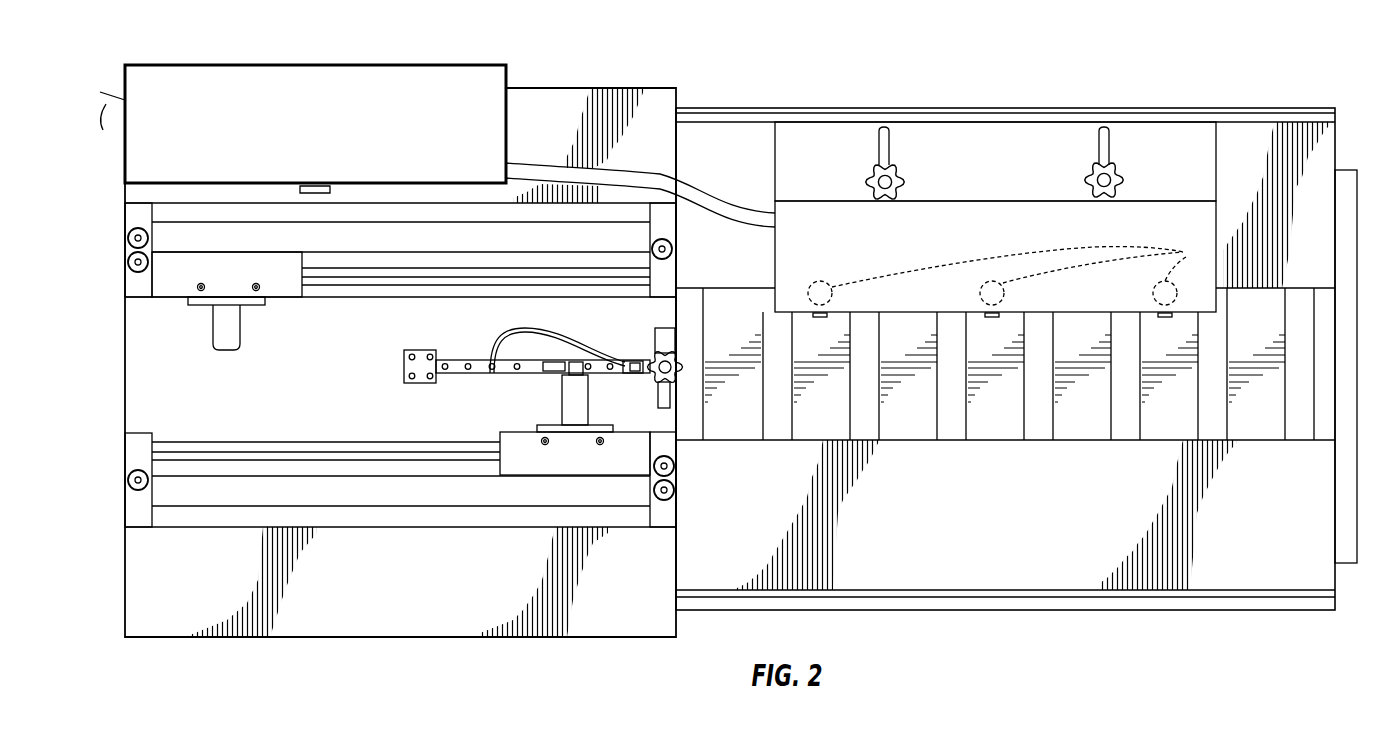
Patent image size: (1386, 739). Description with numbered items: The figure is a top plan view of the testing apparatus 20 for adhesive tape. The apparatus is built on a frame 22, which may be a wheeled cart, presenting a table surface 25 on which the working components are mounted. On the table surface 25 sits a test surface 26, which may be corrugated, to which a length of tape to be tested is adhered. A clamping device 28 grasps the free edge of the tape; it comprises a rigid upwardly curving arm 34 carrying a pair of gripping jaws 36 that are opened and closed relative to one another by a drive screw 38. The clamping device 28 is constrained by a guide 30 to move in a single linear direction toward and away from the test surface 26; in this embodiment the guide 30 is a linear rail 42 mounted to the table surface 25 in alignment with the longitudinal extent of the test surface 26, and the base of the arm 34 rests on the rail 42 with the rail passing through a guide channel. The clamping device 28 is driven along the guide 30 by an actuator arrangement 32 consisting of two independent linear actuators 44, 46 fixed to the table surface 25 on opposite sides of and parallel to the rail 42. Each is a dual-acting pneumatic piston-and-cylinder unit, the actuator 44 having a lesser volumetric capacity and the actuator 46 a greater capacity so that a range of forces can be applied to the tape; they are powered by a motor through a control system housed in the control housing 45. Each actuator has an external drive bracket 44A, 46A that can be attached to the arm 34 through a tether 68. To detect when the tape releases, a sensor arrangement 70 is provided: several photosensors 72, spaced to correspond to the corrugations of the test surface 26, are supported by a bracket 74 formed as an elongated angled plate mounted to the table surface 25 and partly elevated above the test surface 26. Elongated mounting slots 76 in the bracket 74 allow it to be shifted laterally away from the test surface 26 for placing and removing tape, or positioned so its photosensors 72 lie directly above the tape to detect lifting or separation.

The testing apparatus 20 is at (1227, 613).
The frame 22 is at (1290, 614).
The table surface 25 is at (1060, 537).
The test surface 26 is at (900, 428).
The clamping device 28 is at (680, 393).
The guide 30 is at (487, 374).
The actuator arrangement 32 is at (377, 290).
The arm 34 is at (628, 363).
The gripping jaws 36 is at (657, 338).
The drive screw 38 is at (682, 362).
The linear rail 42 is at (457, 360).
The linear actuator 44 is at (353, 260).
The external drive bracket 44A is at (213, 324).
The control housing 45 is at (327, 134).
The linear actuator 46 is at (381, 442).
The external drive bracket 46A is at (588, 403).
The tether 68 is at (524, 330).
The sensor arrangement 70 is at (1017, 178).
The photosensors 72 is at (995, 259).
The bracket 74 is at (1216, 210).
The elongated mounting slots 76 is at (892, 136).